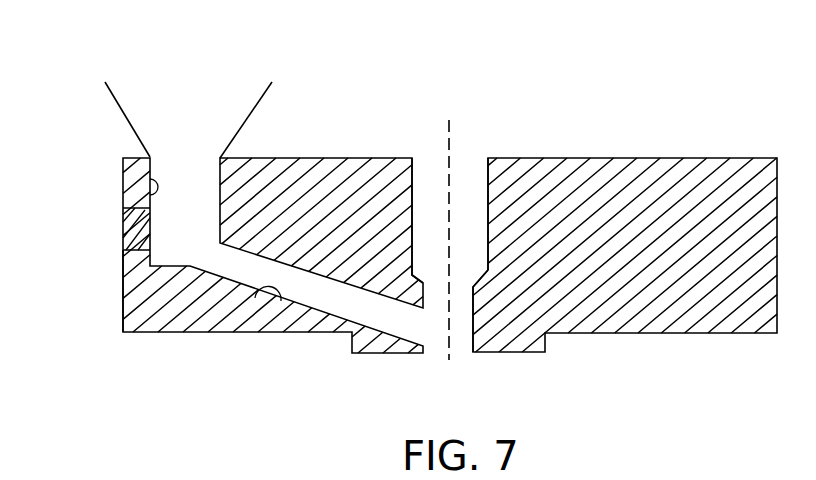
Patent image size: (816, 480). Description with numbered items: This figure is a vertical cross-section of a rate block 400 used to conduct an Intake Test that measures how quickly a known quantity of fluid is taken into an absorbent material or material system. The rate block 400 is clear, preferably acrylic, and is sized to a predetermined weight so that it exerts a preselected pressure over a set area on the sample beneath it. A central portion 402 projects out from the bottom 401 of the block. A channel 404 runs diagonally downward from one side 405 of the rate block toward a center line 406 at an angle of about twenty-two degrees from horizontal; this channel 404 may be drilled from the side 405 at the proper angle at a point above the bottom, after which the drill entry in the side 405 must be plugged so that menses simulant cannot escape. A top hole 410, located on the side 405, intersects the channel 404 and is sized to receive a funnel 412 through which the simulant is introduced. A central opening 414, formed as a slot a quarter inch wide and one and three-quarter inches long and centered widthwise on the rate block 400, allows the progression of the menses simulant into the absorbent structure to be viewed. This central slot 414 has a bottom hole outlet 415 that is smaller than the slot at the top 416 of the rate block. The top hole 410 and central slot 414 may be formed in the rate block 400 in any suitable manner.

The rate block 400 is at (609, 84).
The bottom 401 is at (148, 334).
The central portion 402 is at (547, 345).
The channel 404 is at (256, 299).
The side 405 is at (120, 278).
The center line 406 is at (452, 140).
The top hole 410 is at (150, 183).
The funnel 412 is at (257, 106).
The central opening 414 is at (462, 169).
The bottom hole outlet 415 is at (474, 349).
The top 416 is at (415, 179).